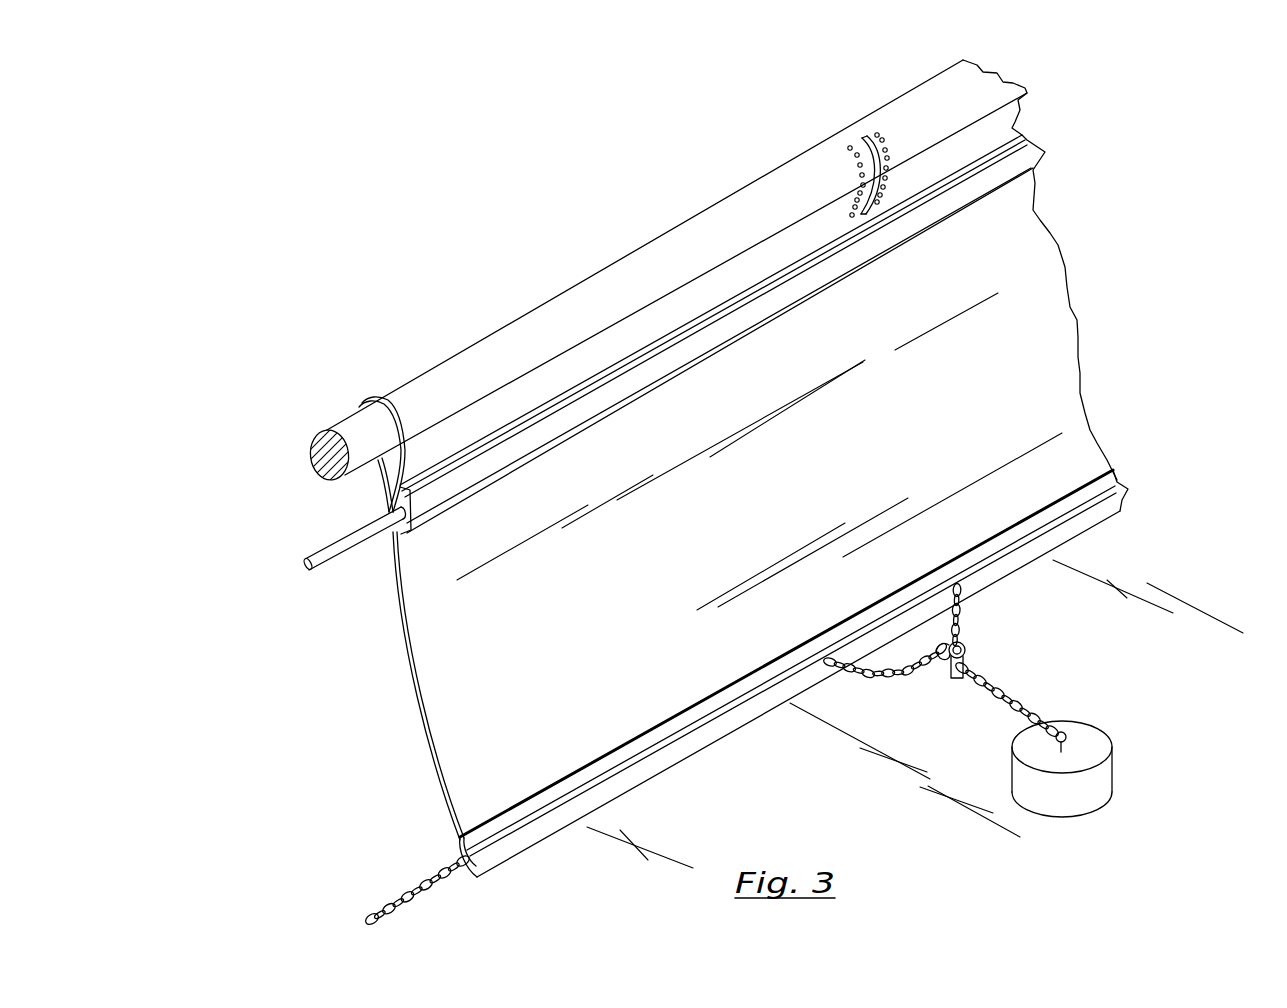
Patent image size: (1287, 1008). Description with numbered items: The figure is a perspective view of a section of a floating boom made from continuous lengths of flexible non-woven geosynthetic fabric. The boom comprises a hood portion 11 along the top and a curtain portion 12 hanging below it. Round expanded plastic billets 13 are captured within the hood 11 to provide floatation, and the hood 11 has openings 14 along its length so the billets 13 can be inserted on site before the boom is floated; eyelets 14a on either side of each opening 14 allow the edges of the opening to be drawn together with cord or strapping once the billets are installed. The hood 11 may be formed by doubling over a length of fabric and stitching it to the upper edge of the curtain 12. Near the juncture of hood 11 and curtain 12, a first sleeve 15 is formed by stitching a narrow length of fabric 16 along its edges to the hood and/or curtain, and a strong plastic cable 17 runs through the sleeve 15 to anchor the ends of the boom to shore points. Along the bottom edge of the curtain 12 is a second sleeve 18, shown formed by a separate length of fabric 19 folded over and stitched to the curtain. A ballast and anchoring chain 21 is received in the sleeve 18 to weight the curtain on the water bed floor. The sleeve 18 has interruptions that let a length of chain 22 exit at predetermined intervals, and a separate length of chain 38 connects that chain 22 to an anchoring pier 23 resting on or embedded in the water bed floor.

The hood portion 11 is at (568, 339).
The curtain portion 12 is at (667, 557).
The expanded plastic billets 13 is at (325, 428).
The openings 14 is at (858, 150).
The eyelets 14a is at (877, 133).
The first sleeve 15 is at (583, 412).
The narrow length of fabric 16 is at (887, 253).
The plastic cable 17 is at (305, 568).
The second sleeve 18 is at (648, 778).
The separate length of fabric 19 is at (508, 814).
The chain 21 is at (392, 900).
The length of chain 22 is at (903, 675).
The anchoring pier 23 is at (1090, 735).
The separate length of chain 38 is at (1015, 685).